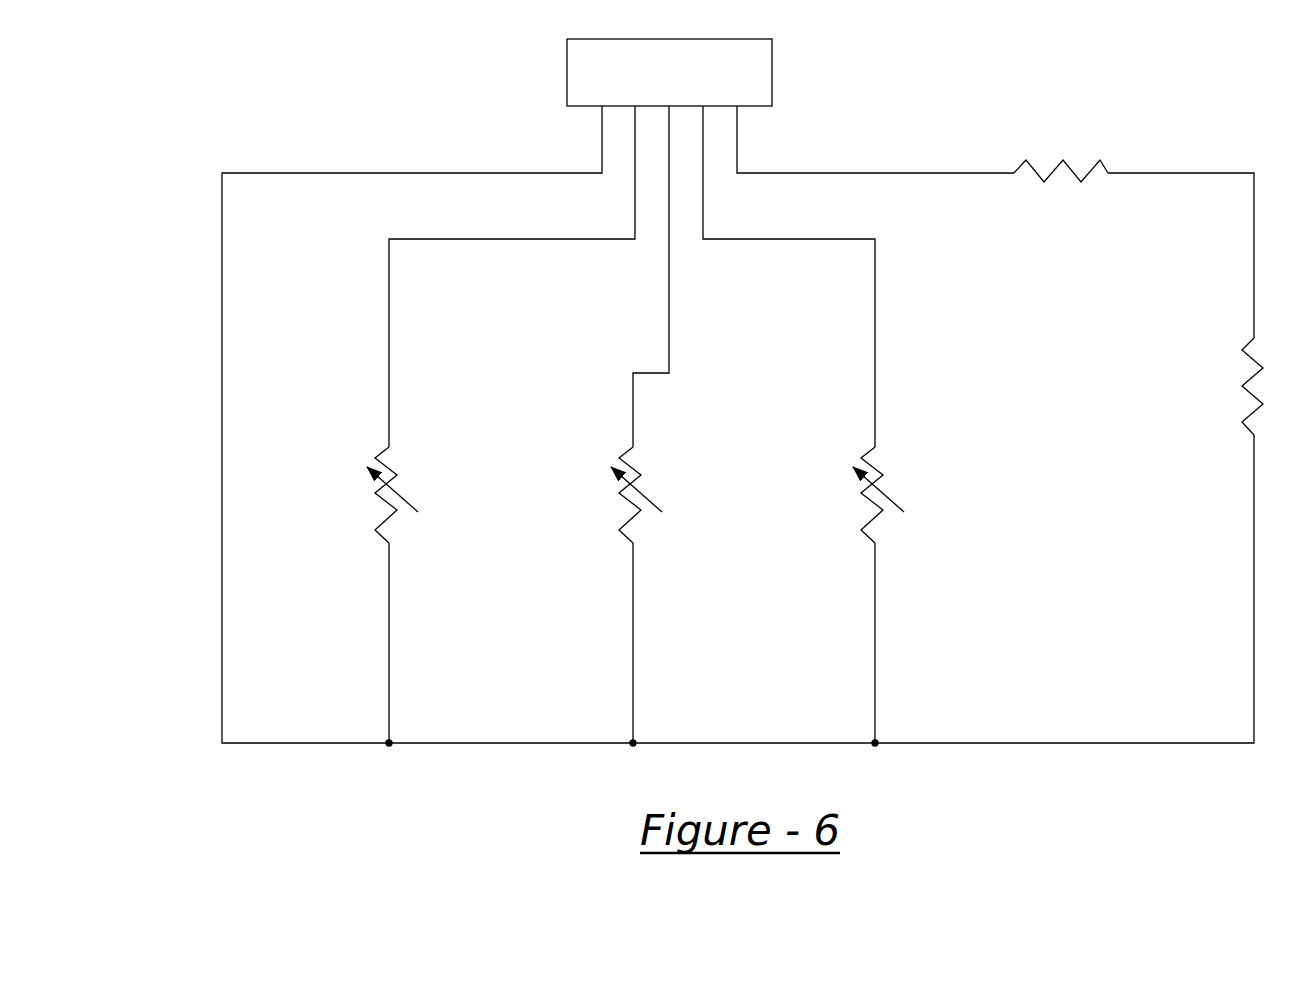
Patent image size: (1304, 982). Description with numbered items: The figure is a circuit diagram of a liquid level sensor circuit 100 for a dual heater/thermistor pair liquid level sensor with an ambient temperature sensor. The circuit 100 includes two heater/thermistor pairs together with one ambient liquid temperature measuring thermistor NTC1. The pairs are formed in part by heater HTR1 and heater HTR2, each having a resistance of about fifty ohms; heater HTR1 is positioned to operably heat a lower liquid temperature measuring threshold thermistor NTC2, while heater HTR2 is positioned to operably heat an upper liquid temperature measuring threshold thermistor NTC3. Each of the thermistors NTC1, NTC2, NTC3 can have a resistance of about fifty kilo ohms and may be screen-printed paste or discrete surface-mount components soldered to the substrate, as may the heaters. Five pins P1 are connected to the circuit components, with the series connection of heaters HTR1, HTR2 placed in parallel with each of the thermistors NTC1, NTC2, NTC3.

The liquid level sensor circuit 100 is at (270, 118).
The pins P1 is at (567, 71).
The ambient liquid temperature measuring thermistor NTC1 is at (831, 456).
The lower liquid temperature measuring threshold thermistor NTC2 is at (588, 456).
The upper liquid temperature measuring threshold thermistor NTC3 is at (344, 456).
The heater HTR1 is at (1062, 194).
The heater HTR2 is at (1210, 345).